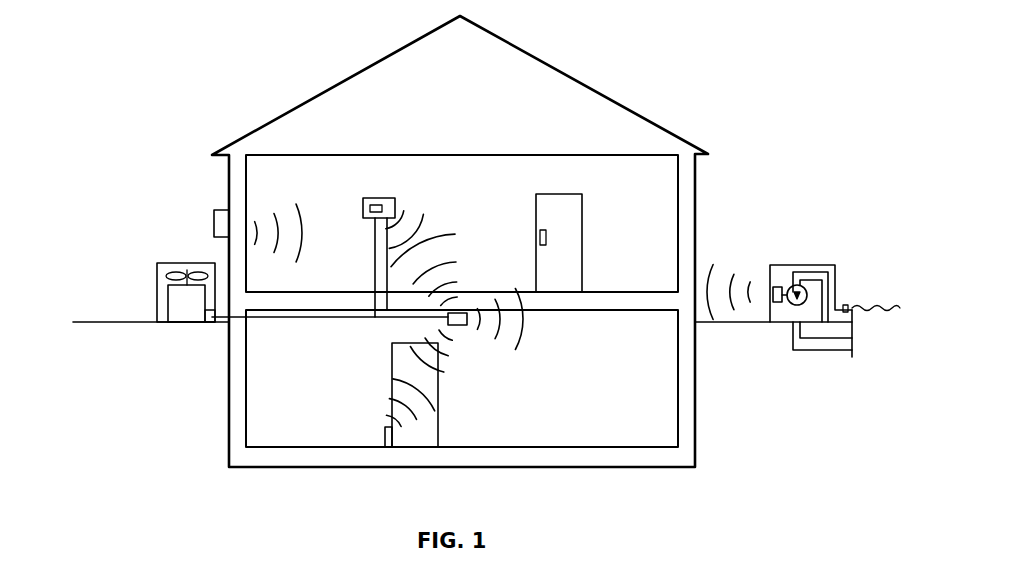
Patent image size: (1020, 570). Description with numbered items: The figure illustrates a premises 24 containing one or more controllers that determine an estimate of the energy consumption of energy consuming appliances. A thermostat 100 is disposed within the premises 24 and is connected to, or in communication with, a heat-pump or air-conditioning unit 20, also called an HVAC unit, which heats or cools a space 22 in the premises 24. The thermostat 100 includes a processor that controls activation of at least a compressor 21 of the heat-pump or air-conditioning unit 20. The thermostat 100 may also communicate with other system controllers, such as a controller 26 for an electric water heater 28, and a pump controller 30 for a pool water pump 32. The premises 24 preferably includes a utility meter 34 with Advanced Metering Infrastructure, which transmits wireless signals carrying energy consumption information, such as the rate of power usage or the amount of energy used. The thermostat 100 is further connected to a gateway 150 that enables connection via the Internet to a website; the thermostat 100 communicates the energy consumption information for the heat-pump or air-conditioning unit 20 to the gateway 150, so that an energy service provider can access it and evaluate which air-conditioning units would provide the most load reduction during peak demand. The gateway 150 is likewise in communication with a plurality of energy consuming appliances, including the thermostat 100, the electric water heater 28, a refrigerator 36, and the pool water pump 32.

The heat-pump or air-conditioning unit 20 is at (156, 265).
The compressor 21 is at (168, 300).
The space 22 is at (648, 213).
The premises 24 is at (693, 138).
The controller 26 is at (385, 445).
The electric water heater 28 is at (433, 435).
The pump controller 30 is at (780, 302).
The pool water pump 32 is at (793, 302).
The utility meter 34 is at (214, 210).
The refrigerator 36 is at (578, 207).
The thermostat 100 is at (363, 198).
The gateway 150 is at (467, 325).